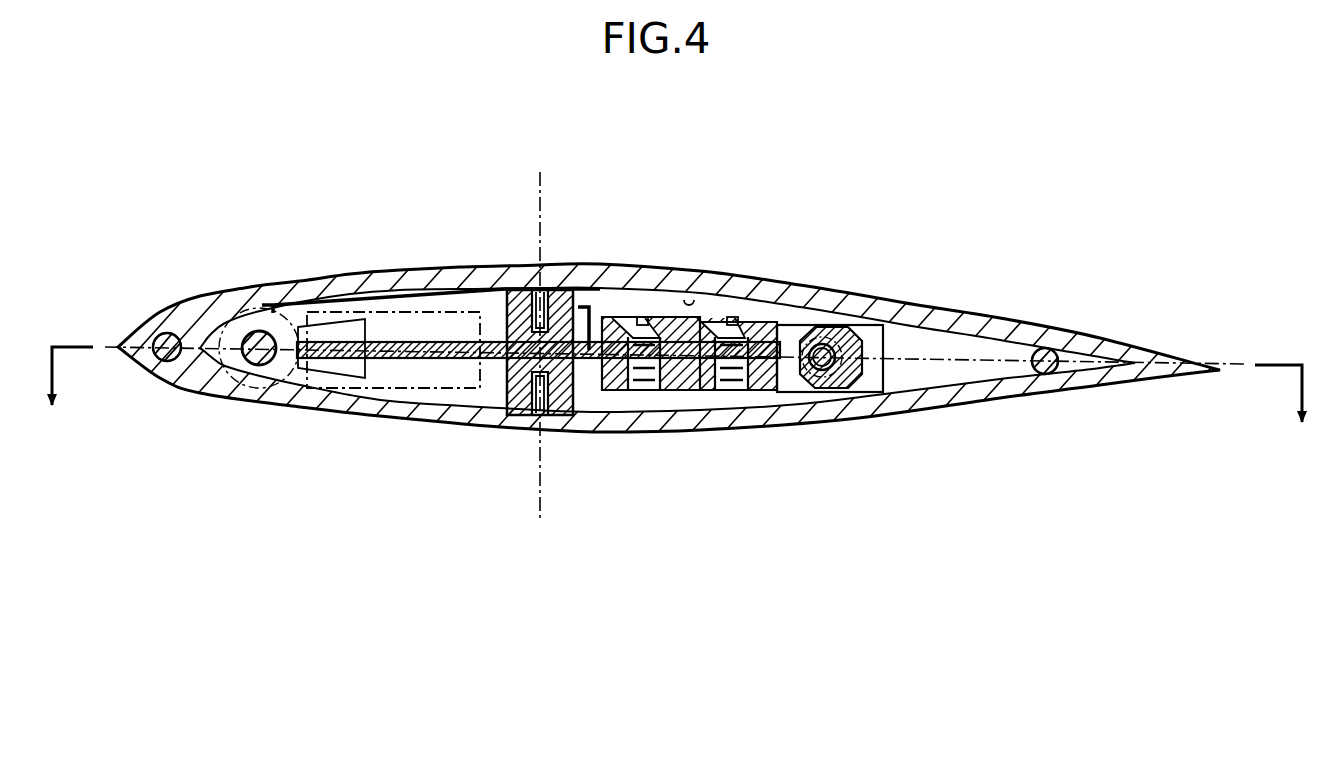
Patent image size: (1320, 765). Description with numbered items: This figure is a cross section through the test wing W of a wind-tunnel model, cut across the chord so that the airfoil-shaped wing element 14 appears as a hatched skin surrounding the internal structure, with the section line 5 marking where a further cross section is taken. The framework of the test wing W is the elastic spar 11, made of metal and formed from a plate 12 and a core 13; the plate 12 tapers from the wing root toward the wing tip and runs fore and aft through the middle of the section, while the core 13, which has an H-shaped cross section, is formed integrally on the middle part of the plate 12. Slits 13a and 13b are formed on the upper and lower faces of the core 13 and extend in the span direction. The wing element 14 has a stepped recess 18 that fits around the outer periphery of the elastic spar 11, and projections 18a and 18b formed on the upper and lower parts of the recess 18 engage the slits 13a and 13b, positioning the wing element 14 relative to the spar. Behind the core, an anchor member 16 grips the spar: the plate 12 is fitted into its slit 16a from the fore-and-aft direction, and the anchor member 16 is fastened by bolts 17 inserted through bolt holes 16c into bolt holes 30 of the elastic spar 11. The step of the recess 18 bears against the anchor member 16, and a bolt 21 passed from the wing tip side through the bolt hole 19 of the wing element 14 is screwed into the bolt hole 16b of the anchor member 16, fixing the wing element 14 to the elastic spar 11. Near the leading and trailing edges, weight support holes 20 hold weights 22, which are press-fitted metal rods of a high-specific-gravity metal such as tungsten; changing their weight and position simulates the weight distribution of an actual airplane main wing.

The test wing W is at (958, 250).
The section line 5- 5 is at (677, 353).
The elastic spar 11 is at (434, 336).
The plate 12 is at (380, 358).
The core 13 is at (502, 396).
The slit 13a is at (548, 295).
The slit 13b is at (540, 415).
The wing element 14 is at (346, 264).
The anchor member 16 is at (294, 312).
The slit 16a is at (665, 390).
The bolt hole 16b is at (840, 393).
The bolt hole 16c is at (642, 390).
The bolt 17 is at (630, 318).
The stepped recess 18 is at (687, 300).
The projection 18a is at (518, 289).
The projection 18b is at (560, 412).
The bolt hole 19 is at (263, 366).
The weight support hole 20 is at (171, 360).
The bolt 21 is at (255, 342).
The weight 22 is at (165, 334).
The bolt hole 30 is at (648, 318).